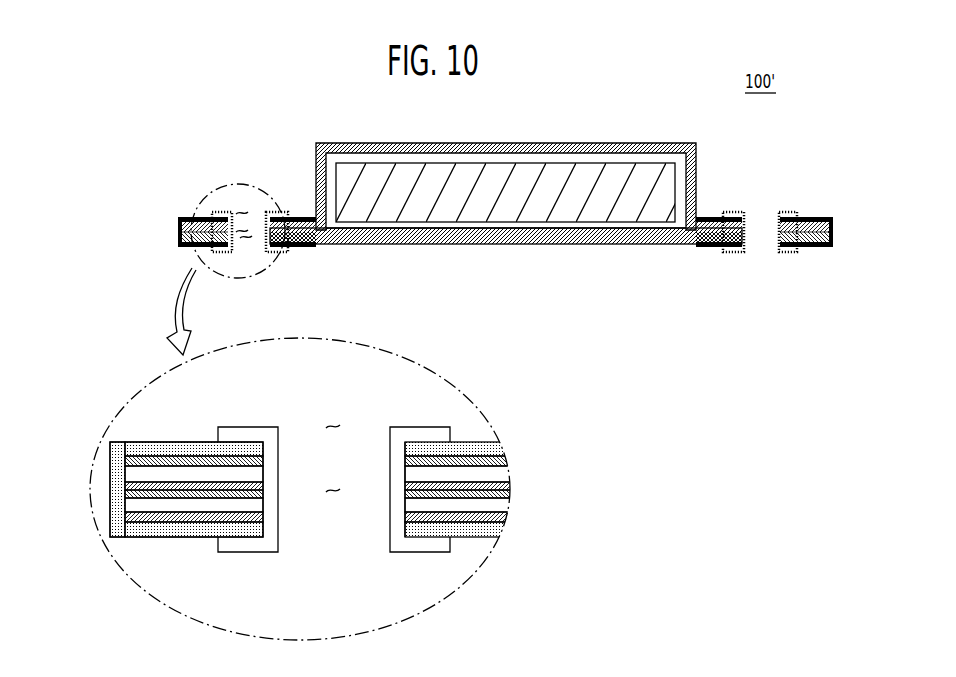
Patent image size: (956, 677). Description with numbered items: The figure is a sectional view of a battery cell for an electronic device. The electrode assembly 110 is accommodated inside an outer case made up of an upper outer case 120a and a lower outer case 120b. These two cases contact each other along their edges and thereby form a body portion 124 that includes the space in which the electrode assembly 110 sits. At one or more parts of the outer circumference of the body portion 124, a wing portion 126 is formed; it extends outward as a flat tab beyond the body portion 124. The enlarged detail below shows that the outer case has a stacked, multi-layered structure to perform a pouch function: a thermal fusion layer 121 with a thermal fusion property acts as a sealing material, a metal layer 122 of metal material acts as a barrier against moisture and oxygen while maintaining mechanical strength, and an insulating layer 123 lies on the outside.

The electrode assembly 110 is at (504, 182).
The upper outer case 120a is at (594, 143).
The lower outer case 120b is at (606, 245).
The body portion 124 is at (513, 258).
The wing portion 126 is at (283, 262).
The thermal fusion layer 121 is at (126, 486).
The metal layer 122 is at (122, 462).
The insulating layer 123 is at (118, 449).